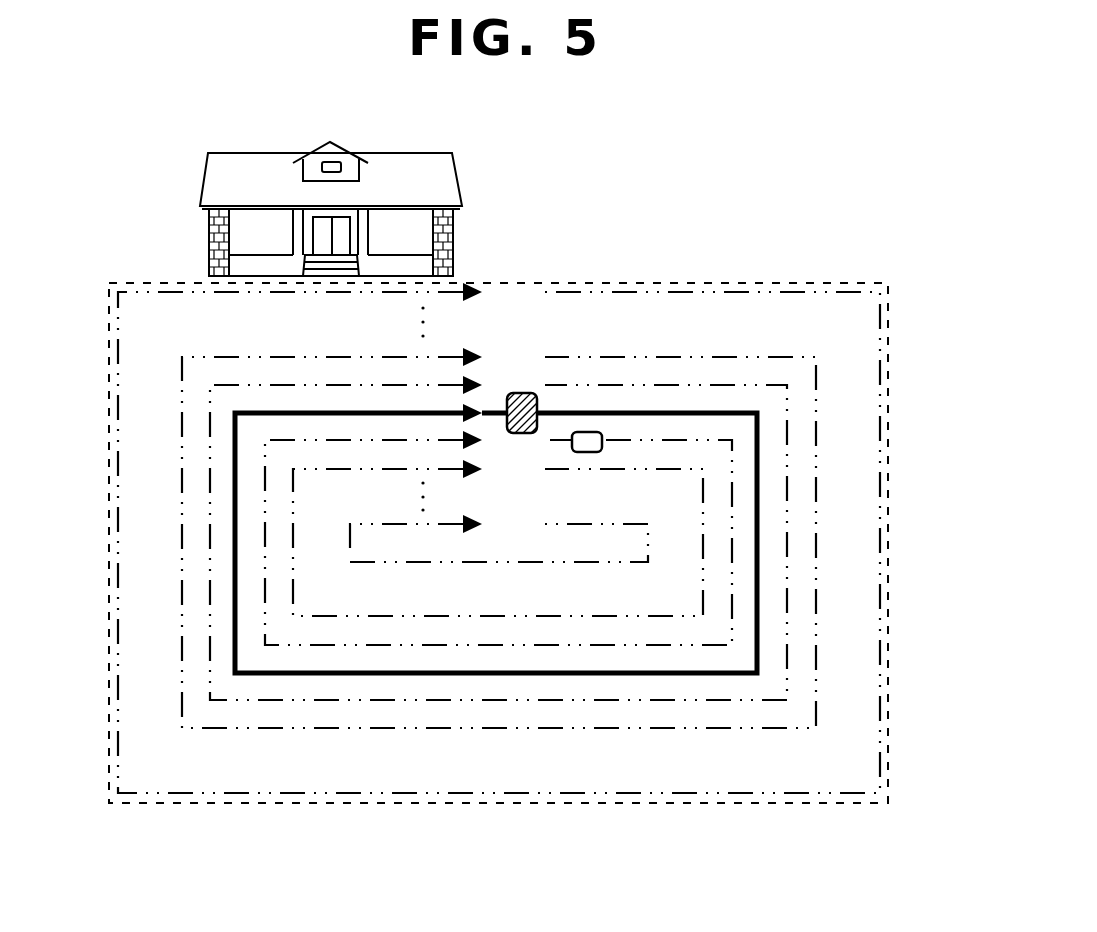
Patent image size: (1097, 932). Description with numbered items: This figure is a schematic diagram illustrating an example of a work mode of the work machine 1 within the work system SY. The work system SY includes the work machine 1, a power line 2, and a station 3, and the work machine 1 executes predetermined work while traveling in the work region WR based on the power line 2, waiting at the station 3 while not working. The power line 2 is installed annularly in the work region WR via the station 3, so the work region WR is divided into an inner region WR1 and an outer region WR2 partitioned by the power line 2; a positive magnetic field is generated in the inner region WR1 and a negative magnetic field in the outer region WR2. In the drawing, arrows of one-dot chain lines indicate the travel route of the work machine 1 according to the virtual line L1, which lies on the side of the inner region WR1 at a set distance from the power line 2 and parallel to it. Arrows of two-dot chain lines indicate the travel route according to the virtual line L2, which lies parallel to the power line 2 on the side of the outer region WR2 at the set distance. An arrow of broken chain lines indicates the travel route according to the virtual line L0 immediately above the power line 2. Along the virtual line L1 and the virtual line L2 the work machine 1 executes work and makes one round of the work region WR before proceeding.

The work system SY is at (82, 246).
The work region WR is at (797, 280).
The inner region WR1 is at (498, 676).
The outer region WR2 is at (502, 634).
The power line 2 is at (591, 651).
The work machine 1 is at (590, 432).
The station 3 is at (522, 393).
The virtual line L0 is at (577, 682).
The virtual line L1 is at (421, 566).
The virtual line L2 is at (497, 705).